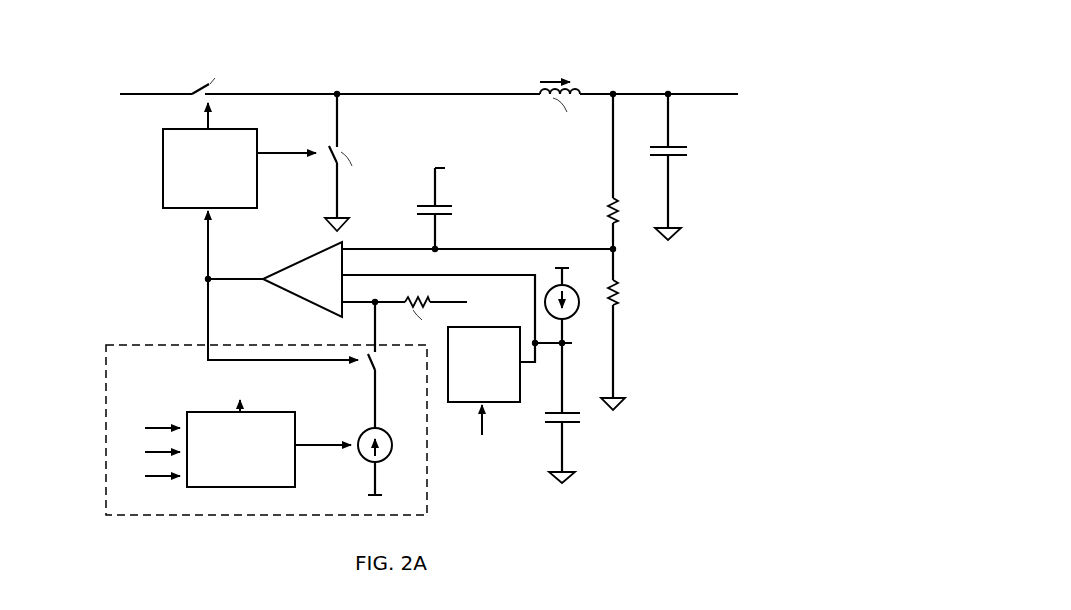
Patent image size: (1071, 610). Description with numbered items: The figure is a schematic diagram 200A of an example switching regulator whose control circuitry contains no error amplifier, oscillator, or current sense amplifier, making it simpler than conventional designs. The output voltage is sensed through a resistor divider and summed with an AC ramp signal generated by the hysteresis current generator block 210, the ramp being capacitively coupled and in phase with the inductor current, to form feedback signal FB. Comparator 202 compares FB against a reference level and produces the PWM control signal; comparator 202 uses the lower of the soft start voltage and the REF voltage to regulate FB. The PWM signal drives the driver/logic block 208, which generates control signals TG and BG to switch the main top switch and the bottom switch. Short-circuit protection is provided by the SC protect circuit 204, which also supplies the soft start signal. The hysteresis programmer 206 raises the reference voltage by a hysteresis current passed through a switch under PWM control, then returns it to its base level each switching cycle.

The schematic diagram 200A is at (680, 15).
The comparator 202 is at (315, 262).
The SC protect circuit 204 is at (484, 364).
The hysteresis programmer 206 is at (168, 365).
The driver/logic block 208 is at (210, 168).
The hysteresis current generator block 210 is at (241, 449).